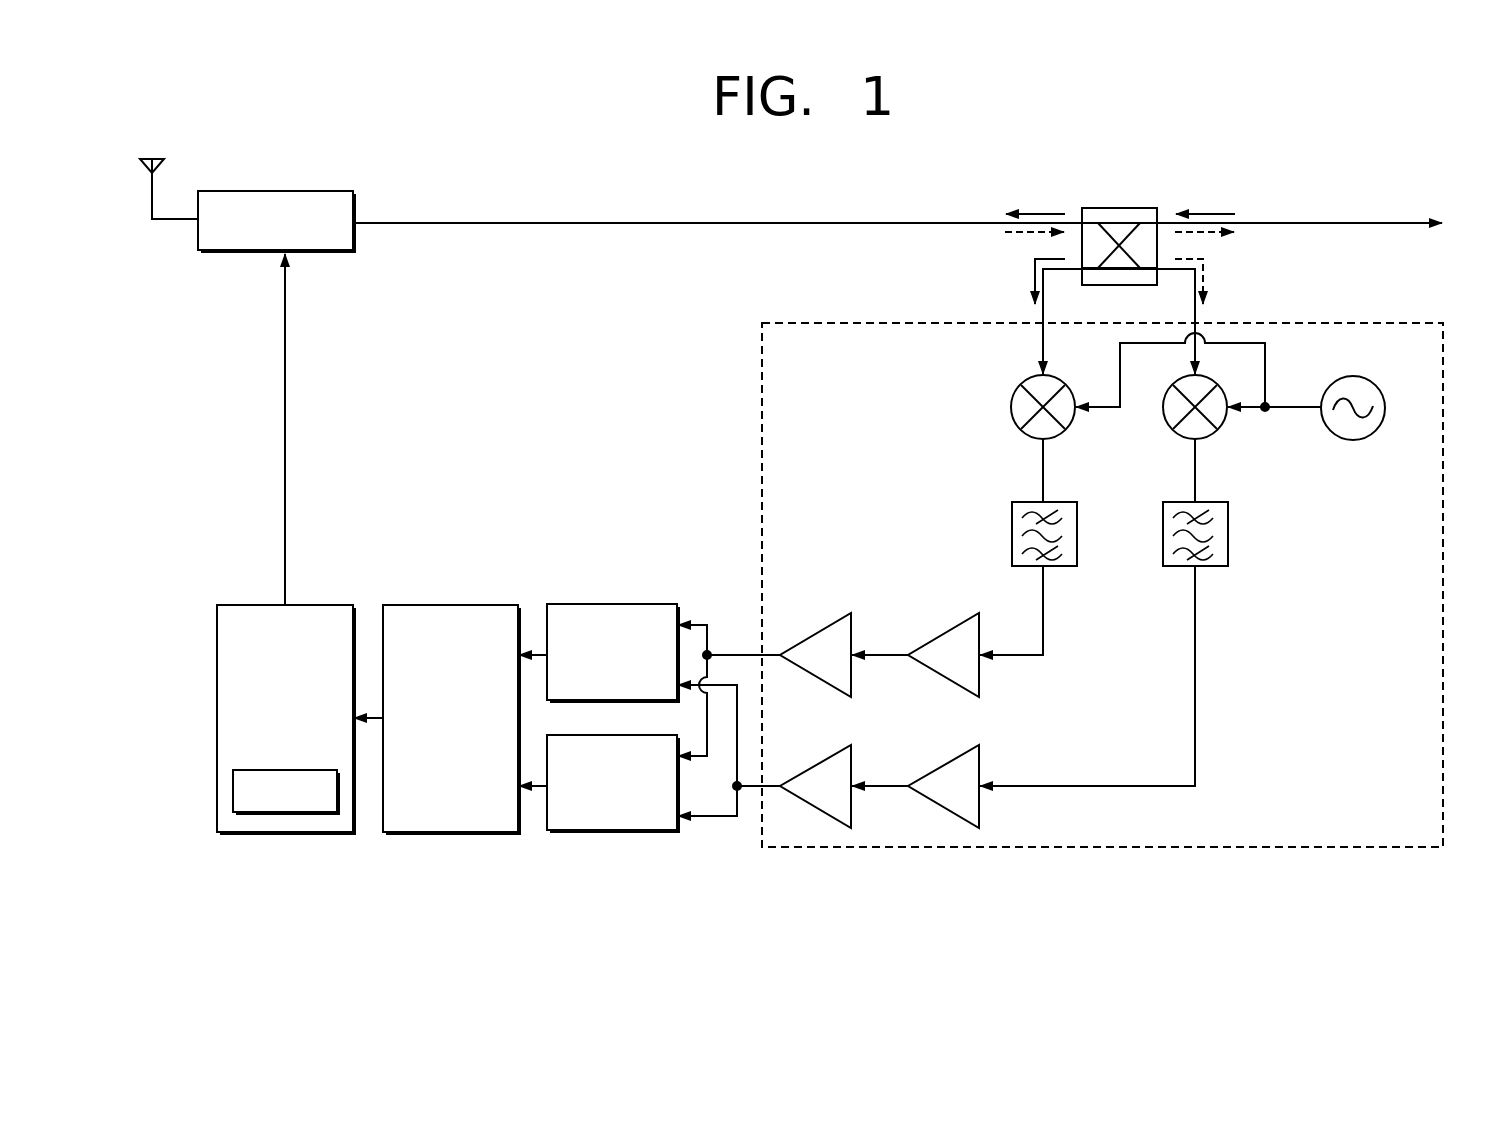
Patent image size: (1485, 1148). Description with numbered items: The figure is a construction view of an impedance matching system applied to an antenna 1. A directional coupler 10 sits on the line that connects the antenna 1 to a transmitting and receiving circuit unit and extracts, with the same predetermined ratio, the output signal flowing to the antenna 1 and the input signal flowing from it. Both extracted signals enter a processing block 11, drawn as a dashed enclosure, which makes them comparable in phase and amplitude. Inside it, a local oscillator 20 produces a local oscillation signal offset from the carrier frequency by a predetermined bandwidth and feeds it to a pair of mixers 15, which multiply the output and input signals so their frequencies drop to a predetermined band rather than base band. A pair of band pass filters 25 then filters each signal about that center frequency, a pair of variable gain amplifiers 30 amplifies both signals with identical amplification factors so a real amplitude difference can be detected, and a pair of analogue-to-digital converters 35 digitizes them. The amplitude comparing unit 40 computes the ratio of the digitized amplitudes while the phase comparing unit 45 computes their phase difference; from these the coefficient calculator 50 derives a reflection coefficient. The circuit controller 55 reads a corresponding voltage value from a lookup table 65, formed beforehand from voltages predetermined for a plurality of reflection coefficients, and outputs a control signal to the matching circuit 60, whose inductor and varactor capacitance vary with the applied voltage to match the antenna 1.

The antenna 1 is at (152, 199).
The directional coupler 10 is at (1118, 207).
The processing block 11 is at (1333, 850).
The pair of mixers 15 is at (1060, 437).
The local oscillator 20 is at (1378, 385).
The pair of band pass filters 25 is at (1060, 567).
The pair of variable gain amplifiers 30 is at (979, 698).
The pair of analogue-to-digital converters 35 is at (851, 698).
The amplitude comparing unit 40 is at (600, 604).
The phase comparing unit 45 is at (600, 833).
The coefficient calculator 50 is at (430, 835).
The circuit controller 55 is at (270, 835).
The matching circuit 60 is at (263, 190).
The lookup table 65 is at (313, 814).